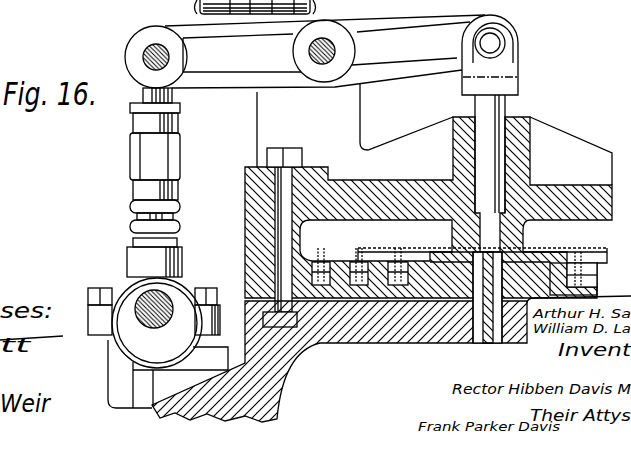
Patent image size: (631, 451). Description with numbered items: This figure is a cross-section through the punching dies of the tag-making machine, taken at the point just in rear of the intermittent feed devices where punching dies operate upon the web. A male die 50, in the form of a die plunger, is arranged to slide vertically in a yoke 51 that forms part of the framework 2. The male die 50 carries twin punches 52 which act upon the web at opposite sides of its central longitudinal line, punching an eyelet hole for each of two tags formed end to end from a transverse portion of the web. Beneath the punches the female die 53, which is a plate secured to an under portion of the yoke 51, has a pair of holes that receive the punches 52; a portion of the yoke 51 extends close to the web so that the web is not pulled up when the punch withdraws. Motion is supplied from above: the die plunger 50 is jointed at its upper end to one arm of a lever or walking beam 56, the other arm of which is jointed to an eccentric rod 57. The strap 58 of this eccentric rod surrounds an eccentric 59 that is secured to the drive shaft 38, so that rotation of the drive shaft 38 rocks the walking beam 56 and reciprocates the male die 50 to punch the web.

The framework 2 is at (190, 410).
The drive shaft 38 is at (160, 325).
The male die 50 is at (493, 168).
The yoke 51 is at (518, 135).
The twin punches 52 is at (505, 244).
The female die 53 is at (435, 243).
The lever or walking beam 56 is at (403, 22).
The eccentric rod 57 is at (143, 162).
The strap 58 is at (117, 347).
The eccentric 59 is at (182, 294).